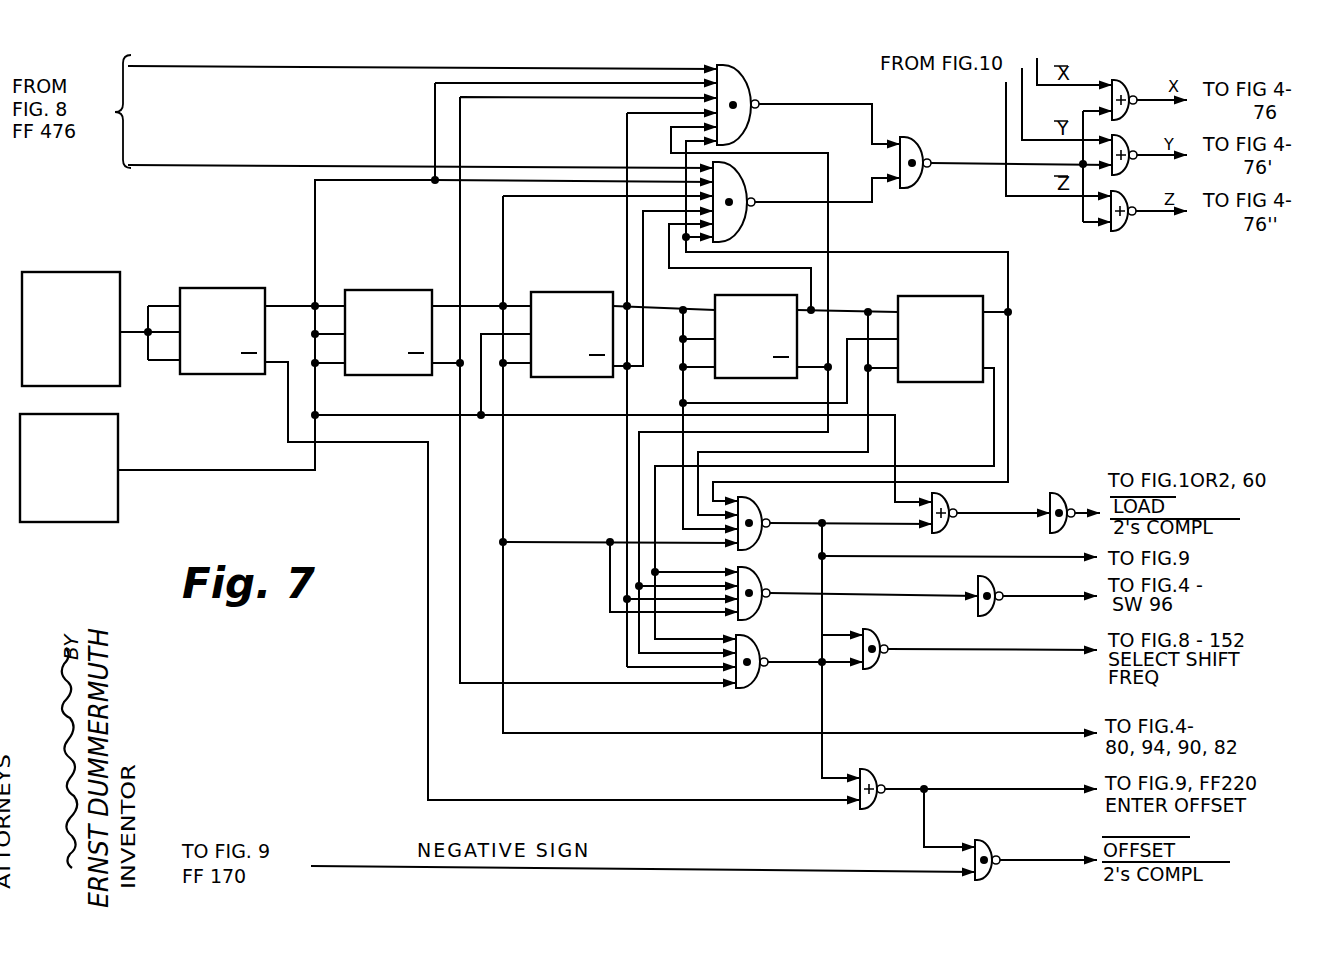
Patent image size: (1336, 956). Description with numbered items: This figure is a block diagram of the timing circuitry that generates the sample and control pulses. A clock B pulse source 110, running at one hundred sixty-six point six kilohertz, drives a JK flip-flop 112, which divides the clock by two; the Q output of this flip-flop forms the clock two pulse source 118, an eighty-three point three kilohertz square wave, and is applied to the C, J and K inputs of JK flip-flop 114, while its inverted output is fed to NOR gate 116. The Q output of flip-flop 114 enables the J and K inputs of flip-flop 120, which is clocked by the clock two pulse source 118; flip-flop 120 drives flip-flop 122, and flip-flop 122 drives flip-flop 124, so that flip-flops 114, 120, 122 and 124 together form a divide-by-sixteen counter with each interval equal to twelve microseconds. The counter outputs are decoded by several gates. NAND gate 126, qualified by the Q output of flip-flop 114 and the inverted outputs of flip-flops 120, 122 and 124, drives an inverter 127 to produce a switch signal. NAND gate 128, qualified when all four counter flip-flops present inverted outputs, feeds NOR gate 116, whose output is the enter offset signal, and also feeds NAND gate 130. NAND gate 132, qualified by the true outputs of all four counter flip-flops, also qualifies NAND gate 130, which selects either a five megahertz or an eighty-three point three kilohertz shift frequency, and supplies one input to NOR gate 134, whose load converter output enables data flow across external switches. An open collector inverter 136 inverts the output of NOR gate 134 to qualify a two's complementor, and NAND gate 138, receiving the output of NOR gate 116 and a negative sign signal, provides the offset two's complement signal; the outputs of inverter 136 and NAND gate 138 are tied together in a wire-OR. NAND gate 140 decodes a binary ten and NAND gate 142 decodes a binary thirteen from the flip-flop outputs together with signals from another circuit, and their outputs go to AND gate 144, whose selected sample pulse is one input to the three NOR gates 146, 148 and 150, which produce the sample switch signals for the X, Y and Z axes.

The clock B pulse source 110 is at (87, 272).
The clock 2 pulse source 118 is at (89, 418).
The JK flip-flop 112 is at (226, 288).
The JK flip-flop 114 is at (386, 288).
The JK flip-flop 120 is at (563, 289).
The JK flip-flop 122 is at (737, 296).
The JK flip-flop 124 is at (928, 298).
The NAND gate 140 is at (737, 78).
The NAND gate 142 is at (751, 188).
The AND gate 144 is at (908, 139).
The NOR gate 146 is at (1121, 81).
The NOR gate 148 is at (1127, 141).
The NOR gate 150 is at (1126, 197).
The NAND gate 132 is at (760, 509).
The NAND gate 126 is at (758, 578).
The NAND gate 128 is at (755, 647).
The NOR gate 134 is at (957, 492).
The open collector inverter 136 is at (1070, 478).
The inverter 127 is at (994, 587).
The NAND gate 130 is at (880, 637).
The NOR gate 116 is at (873, 772).
The NAND gate 138 is at (983, 842).